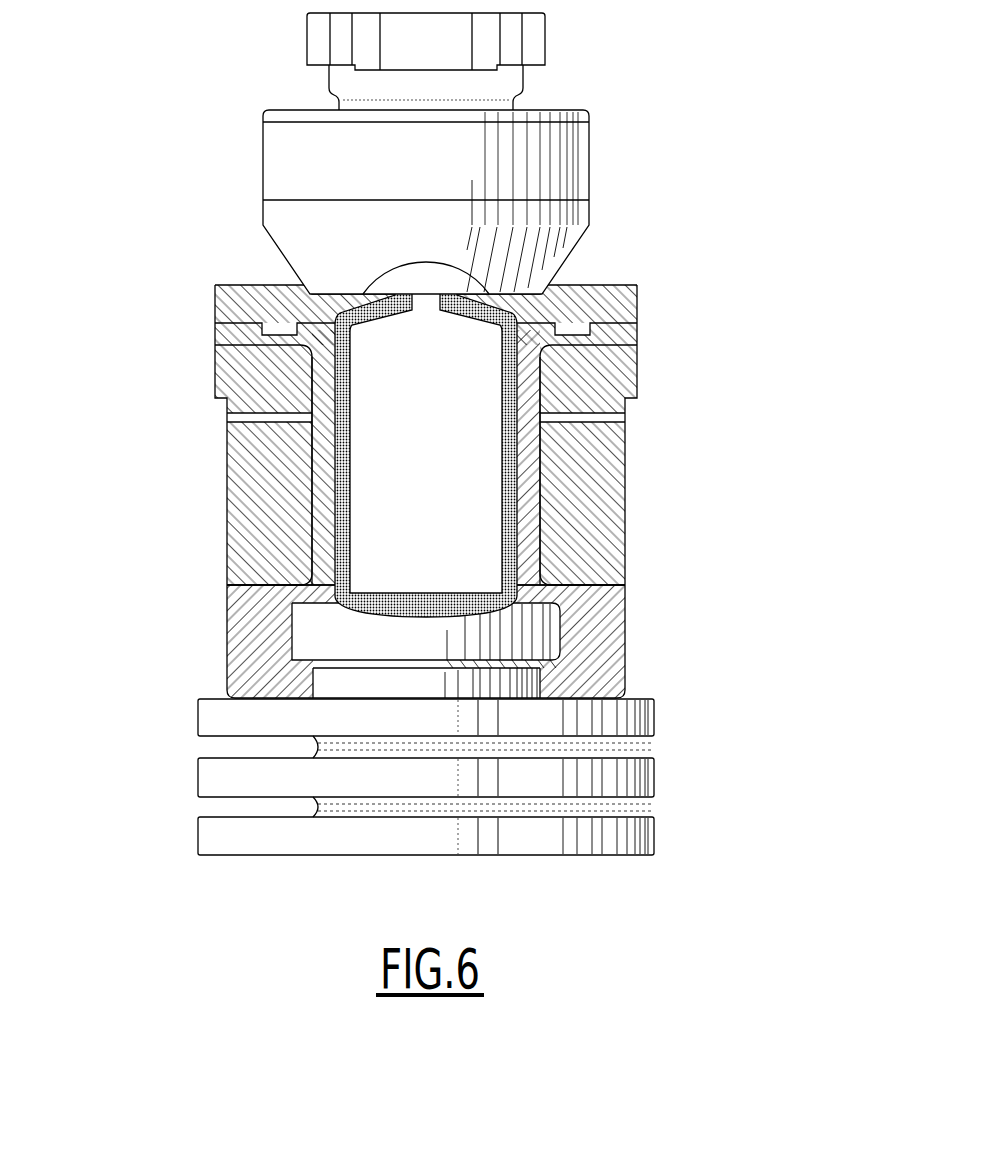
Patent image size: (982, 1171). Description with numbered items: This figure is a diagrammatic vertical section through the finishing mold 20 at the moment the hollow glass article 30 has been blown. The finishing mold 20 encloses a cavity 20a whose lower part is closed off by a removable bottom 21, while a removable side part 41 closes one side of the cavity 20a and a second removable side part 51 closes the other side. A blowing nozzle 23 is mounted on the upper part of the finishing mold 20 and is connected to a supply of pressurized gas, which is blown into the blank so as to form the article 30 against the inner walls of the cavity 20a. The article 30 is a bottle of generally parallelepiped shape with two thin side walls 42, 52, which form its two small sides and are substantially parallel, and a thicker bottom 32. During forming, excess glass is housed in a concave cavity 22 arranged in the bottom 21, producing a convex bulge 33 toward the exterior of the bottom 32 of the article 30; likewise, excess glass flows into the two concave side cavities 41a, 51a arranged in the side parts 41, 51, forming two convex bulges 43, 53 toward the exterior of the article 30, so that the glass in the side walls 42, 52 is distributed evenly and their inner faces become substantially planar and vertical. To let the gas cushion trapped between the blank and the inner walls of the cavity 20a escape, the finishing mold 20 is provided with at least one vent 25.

The finishing mold 20 is at (438, 570).
The cavity 20a is at (370, 545).
The removable bottom 21 is at (600, 717).
The concave cavity 22 is at (562, 646).
The blowing nozzle 23 is at (565, 162).
The vent 25 is at (263, 403).
The hollow glass article 30 is at (283, 446).
The bottom 32 is at (407, 621).
The convex bulge 33 is at (373, 600).
The removable side part 41 is at (192, 449).
The concave side cavity 41a is at (300, 584).
The side wall 42 is at (350, 407).
The convex bulge 43 is at (325, 497).
The second removable side part 51 is at (604, 439).
The concave side cavity 51a is at (437, 593).
The side wall 52 is at (502, 407).
The convex bulge 53 is at (528, 448).